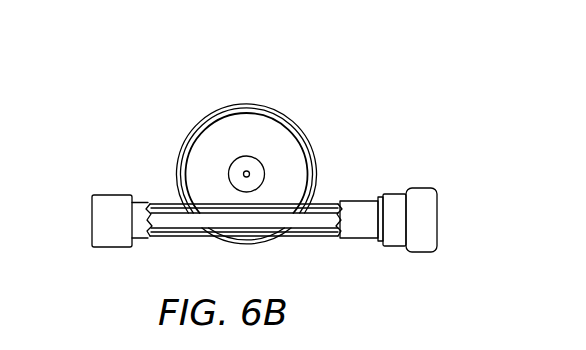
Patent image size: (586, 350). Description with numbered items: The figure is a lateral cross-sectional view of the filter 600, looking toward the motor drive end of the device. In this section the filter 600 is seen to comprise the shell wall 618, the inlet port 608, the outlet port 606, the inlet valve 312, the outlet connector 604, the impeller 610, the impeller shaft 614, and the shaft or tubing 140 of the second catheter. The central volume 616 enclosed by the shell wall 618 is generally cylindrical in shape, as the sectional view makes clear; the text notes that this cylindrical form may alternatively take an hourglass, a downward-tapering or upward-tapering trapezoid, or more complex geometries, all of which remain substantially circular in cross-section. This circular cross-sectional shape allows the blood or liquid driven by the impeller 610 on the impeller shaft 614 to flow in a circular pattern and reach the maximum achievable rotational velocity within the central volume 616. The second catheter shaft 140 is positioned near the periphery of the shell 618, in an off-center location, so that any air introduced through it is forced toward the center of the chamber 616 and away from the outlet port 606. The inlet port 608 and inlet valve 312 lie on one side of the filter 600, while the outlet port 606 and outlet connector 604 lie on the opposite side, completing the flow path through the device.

The filter 600 is at (252, 46).
The outlet connector 604 is at (82, 180).
The outlet port 606 is at (217, 247).
The inlet port 608 is at (397, 187).
The impeller 610 is at (206, 153).
The impeller shaft 614 is at (196, 124).
The central volume 616 is at (264, 133).
The shell wall 618 is at (301, 172).
The shaft or tubing of the second catheter 140 is at (296, 271).
The inlet valve 312 is at (475, 250).